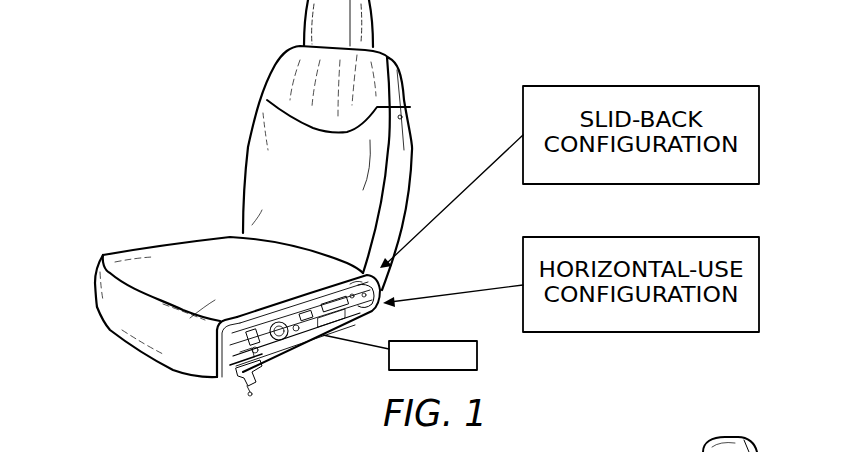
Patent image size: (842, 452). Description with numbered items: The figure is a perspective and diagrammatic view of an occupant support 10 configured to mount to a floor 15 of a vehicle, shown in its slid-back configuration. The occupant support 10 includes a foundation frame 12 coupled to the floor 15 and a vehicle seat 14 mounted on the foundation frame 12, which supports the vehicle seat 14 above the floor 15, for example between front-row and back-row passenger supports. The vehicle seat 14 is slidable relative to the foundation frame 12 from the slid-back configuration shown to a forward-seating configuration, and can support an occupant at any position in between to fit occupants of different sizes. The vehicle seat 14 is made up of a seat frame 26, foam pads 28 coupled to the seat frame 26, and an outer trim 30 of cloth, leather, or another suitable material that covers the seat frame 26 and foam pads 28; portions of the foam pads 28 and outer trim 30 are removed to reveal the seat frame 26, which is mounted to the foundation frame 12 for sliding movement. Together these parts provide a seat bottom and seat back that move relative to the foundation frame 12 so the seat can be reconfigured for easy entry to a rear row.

The occupant support 10 is at (431, 40).
The foundation frame 12 is at (293, 341).
The vehicle seat 14 is at (205, 224).
The floor 15 is at (477, 355).
The seat frame 26 is at (370, 299).
The foam pads 28 is at (229, 341).
The outer trim 30 is at (134, 272).